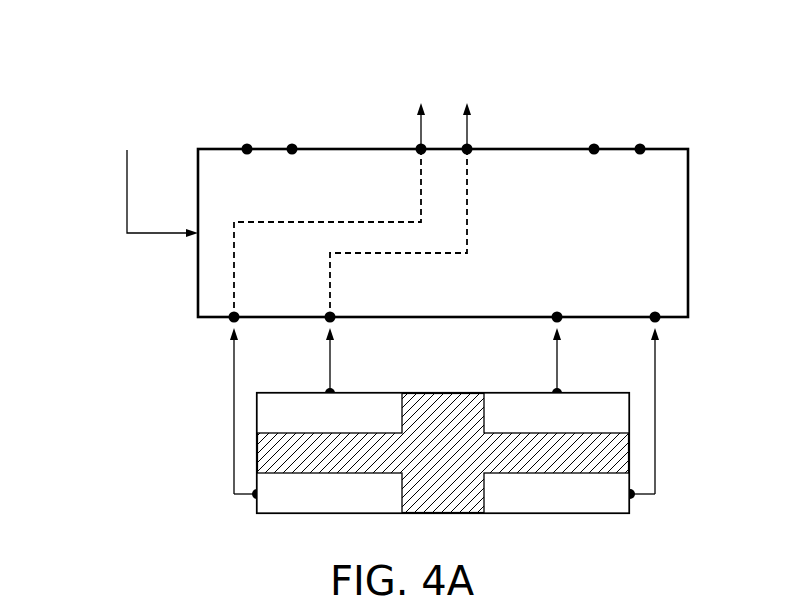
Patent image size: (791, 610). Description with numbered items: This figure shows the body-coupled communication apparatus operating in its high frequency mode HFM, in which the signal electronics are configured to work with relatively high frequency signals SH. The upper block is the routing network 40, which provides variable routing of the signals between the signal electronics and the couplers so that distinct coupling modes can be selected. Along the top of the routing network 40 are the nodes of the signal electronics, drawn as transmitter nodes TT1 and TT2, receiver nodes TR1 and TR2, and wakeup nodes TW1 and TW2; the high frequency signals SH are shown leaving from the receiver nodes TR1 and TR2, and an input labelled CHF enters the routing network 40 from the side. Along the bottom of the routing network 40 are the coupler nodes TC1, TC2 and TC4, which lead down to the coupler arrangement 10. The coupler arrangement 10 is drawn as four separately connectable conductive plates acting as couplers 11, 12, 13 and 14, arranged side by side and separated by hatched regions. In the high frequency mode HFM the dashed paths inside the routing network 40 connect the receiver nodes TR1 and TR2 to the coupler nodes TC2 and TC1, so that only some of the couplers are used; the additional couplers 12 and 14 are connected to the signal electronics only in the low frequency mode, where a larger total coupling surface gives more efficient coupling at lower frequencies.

The coupler arrangement 10 is at (380, 453).
The coupler 11 is at (329, 413).
The coupler 12 is at (556, 413).
The coupler 13 is at (329, 493).
The coupler 14 is at (556, 493).
The routing network 40 is at (198, 278).
The high frequency mode HFM is at (146, 114).
The cooling heat flow input CHF is at (162, 193).
The high frequency signals SH is at (444, 117).
The transmitter node TT1 is at (223, 139).
The transmitter node TT2 is at (313, 139).
The receiver node TR1 is at (397, 139).
The receiver node TR2 is at (489, 139).
The wakeup node TW1 is at (570, 140).
The wakeup node TW2 is at (663, 140).
The coupler node TC1 is at (308, 355).
The coupler node TC2 is at (375, 406).
The thermocouple TC4 is at (631, 406).